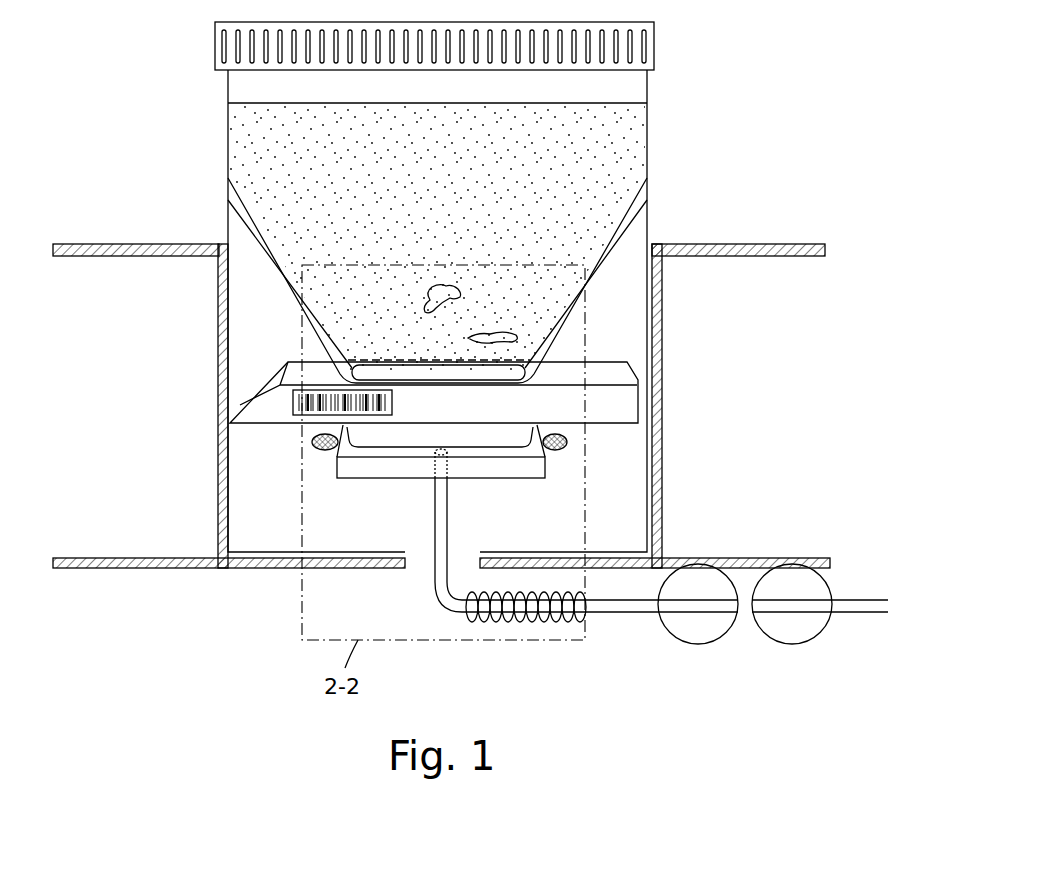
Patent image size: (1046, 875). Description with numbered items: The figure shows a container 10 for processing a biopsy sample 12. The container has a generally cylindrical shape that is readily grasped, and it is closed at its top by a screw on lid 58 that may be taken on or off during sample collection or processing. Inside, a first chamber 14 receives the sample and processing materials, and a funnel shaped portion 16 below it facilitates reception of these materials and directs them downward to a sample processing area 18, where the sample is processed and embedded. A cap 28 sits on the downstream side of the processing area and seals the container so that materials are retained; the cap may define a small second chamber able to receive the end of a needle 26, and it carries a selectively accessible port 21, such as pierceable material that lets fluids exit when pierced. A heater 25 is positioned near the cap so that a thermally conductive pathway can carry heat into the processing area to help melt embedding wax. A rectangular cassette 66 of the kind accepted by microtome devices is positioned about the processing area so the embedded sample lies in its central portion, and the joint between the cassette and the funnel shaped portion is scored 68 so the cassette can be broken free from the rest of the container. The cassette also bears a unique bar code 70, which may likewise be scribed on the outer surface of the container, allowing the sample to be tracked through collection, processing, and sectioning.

The container 10 is at (430, 287).
The biopsy sample 12 is at (461, 298).
The first chamber 14 is at (245, 137).
The funnel shaped portion 16 is at (245, 210).
The sample processing area 18 is at (417, 372).
The selectively accessible port 21 is at (432, 487).
The heater 25 is at (550, 452).
The needle 26 is at (432, 573).
The cap 28 is at (350, 470).
The screw on lid 58 is at (652, 52).
The rectangular cassette 66 is at (608, 412).
The scored joint 68 is at (537, 377).
The bar code 70 is at (305, 418).